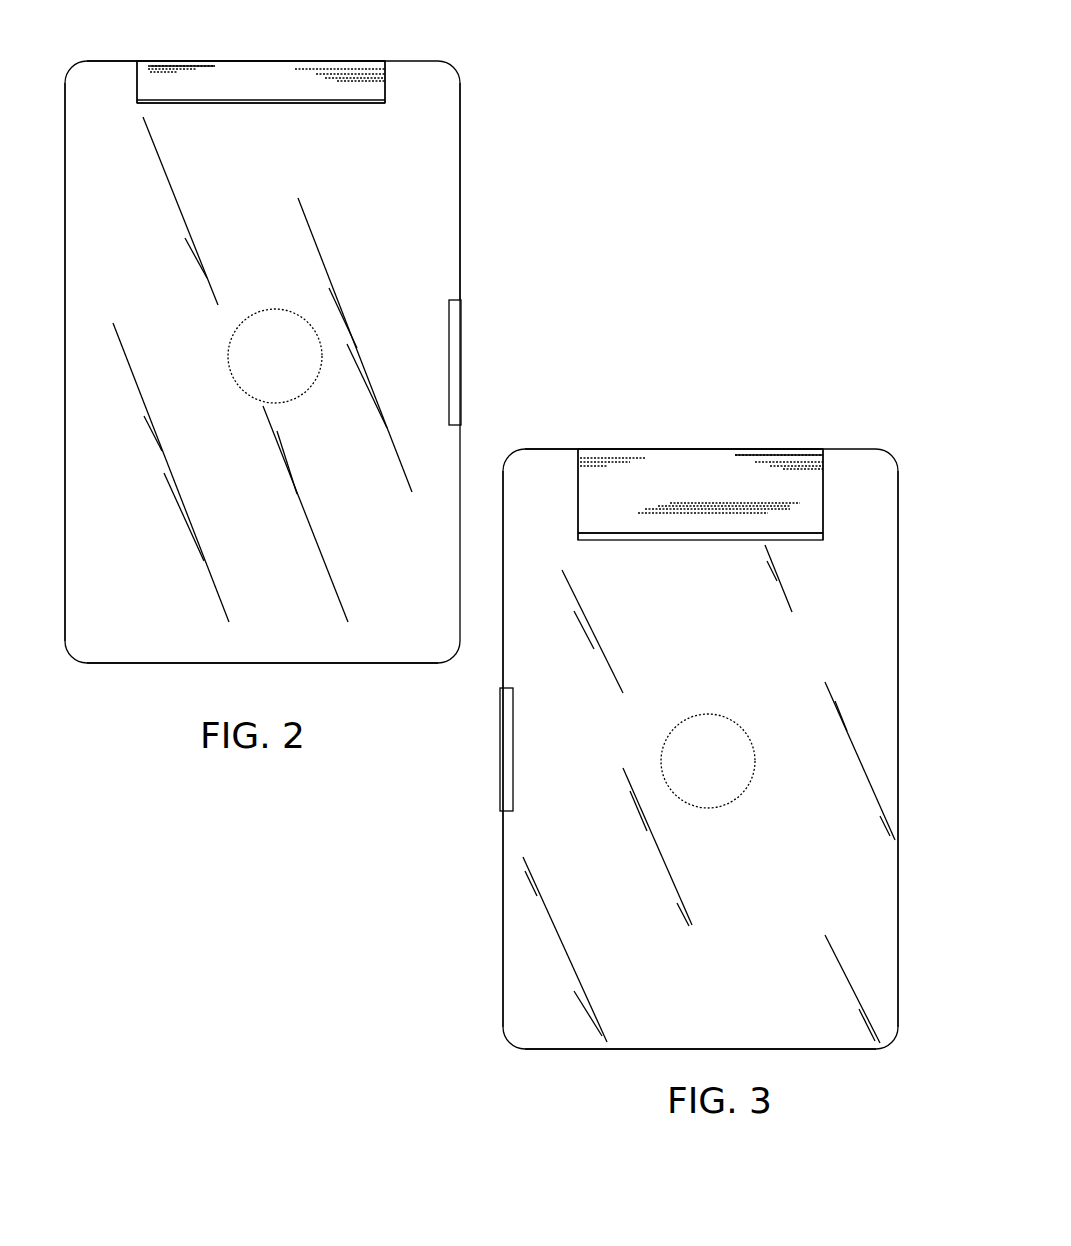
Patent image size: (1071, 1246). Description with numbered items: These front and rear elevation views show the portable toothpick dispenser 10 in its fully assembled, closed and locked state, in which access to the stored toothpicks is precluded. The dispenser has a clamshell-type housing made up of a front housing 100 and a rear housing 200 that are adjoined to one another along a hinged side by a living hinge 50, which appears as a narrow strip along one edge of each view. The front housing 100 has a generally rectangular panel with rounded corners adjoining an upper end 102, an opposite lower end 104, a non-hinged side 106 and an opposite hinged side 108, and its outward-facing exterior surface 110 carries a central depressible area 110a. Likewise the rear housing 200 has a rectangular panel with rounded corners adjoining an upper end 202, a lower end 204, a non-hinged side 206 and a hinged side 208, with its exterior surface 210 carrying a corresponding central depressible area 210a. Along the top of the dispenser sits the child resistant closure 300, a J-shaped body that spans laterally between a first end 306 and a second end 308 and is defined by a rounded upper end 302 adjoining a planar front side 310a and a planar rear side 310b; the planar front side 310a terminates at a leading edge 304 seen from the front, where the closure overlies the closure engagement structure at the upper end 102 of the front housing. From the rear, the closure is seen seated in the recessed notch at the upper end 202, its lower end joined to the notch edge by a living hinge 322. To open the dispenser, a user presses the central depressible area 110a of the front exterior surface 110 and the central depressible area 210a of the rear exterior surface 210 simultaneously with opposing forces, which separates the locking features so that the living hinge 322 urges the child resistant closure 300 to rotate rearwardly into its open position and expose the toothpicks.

In FIG. 2, the portable toothpick dispenser 10 is at (521, 279).
In FIG. 3, the portable toothpick dispenser 10 is at (771, 336).
In FIG. 2, the living hinge 50 is at (462, 362).
In FIG. 3, the living hinge 50 is at (500, 760).
In FIG. 2, the front housing 100 is at (464, 127).
In FIG. 2, the upper end 102 is at (118, 60).
In FIG. 2, the lower end 104 is at (172, 663).
In FIG. 2, the non-hinged side 106 is at (65, 336).
In FIG. 2, the hinged side 108 is at (460, 205).
In FIG. 2, the exterior surface 110 is at (286, 208).
In FIG. 2, the central depressible area 110a is at (297, 368).
In FIG. 3, the rear housing 200 is at (499, 928).
In FIG. 3, the upper end 202 is at (540, 448).
In FIG. 3, the lower end 204 is at (578, 1050).
In FIG. 3, the non-hinged side 206 is at (898, 647).
In FIG. 3, the hinged side 208 is at (503, 849).
In FIG. 3, the exterior surface 210 is at (720, 643).
In FIG. 3, the central depressible area 210a is at (732, 771).
In FIG. 2, the child resistant closure 300 is at (276, 51).
In FIG. 3, the child resistant closure 300 is at (683, 442).
In FIG. 2, the rounded upper end 302 is at (313, 60).
In FIG. 3, the rounded upper end 302 is at (622, 447).
In FIG. 2, the leading edge 304 is at (313, 103).
In FIG. 2, the first end 306 is at (137, 82).
In FIG. 3, the first end 306 is at (823, 502).
In FIG. 2, the second end 308 is at (385, 82).
In FIG. 3, the second end 308 is at (578, 502).
In FIG. 2, the planar front side 310a is at (208, 82).
In FIG. 3, the planar rear side 310b is at (765, 478).
In FIG. 3, the living hinge 322 is at (685, 535).